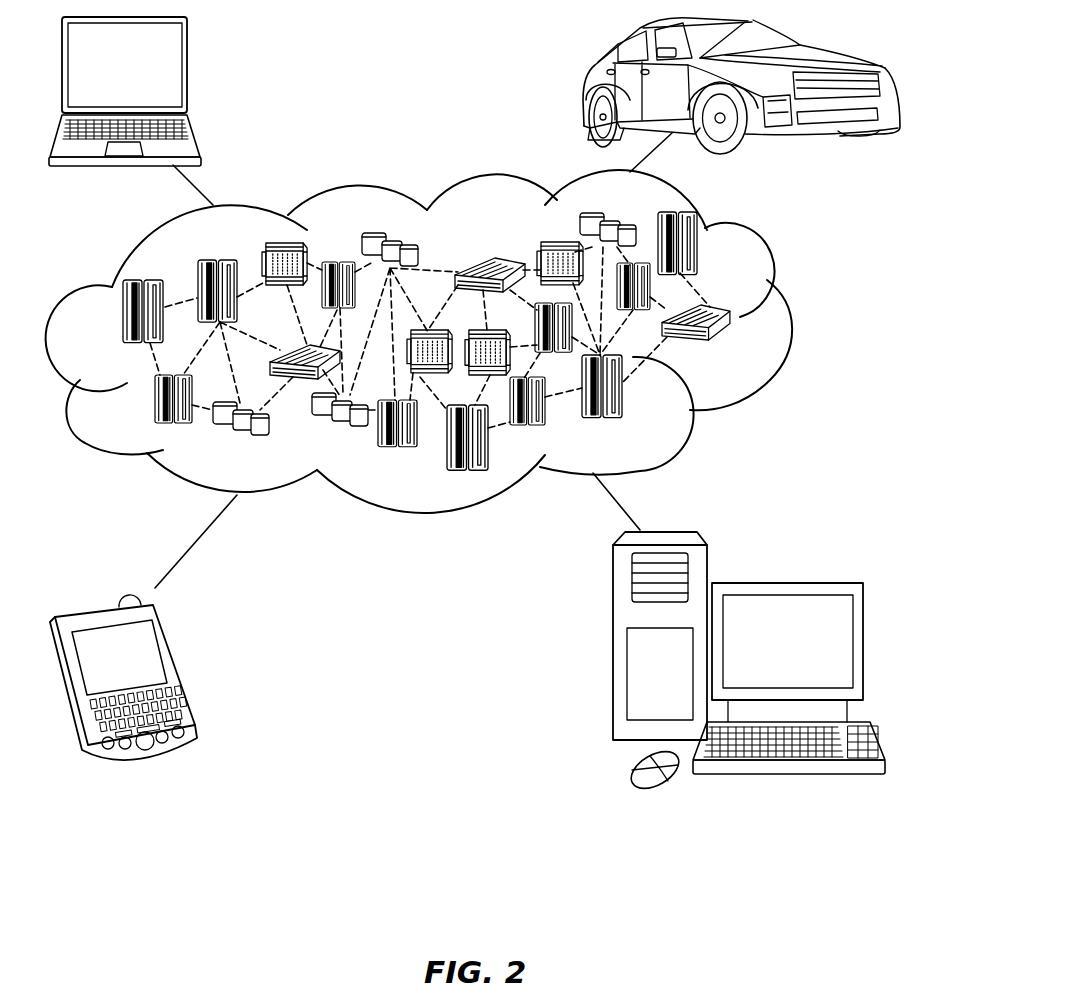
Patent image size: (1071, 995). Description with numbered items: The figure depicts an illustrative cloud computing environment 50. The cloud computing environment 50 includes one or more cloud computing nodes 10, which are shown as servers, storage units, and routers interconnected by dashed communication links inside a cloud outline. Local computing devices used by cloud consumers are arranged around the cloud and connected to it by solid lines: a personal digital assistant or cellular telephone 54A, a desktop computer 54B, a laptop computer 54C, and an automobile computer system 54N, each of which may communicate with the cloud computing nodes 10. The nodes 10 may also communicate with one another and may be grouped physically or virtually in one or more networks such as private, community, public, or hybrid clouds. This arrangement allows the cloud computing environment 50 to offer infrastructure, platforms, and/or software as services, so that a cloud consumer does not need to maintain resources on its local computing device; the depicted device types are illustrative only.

The cloud computing node 10 is at (730, 347).
The cloud computing environment 50 is at (788, 322).
The personal digital assistant or cellular telephone 54A is at (180, 670).
The desktop computer 54B is at (785, 582).
The laptop computer 54C is at (187, 70).
The automobile computer system 54N is at (587, 86).